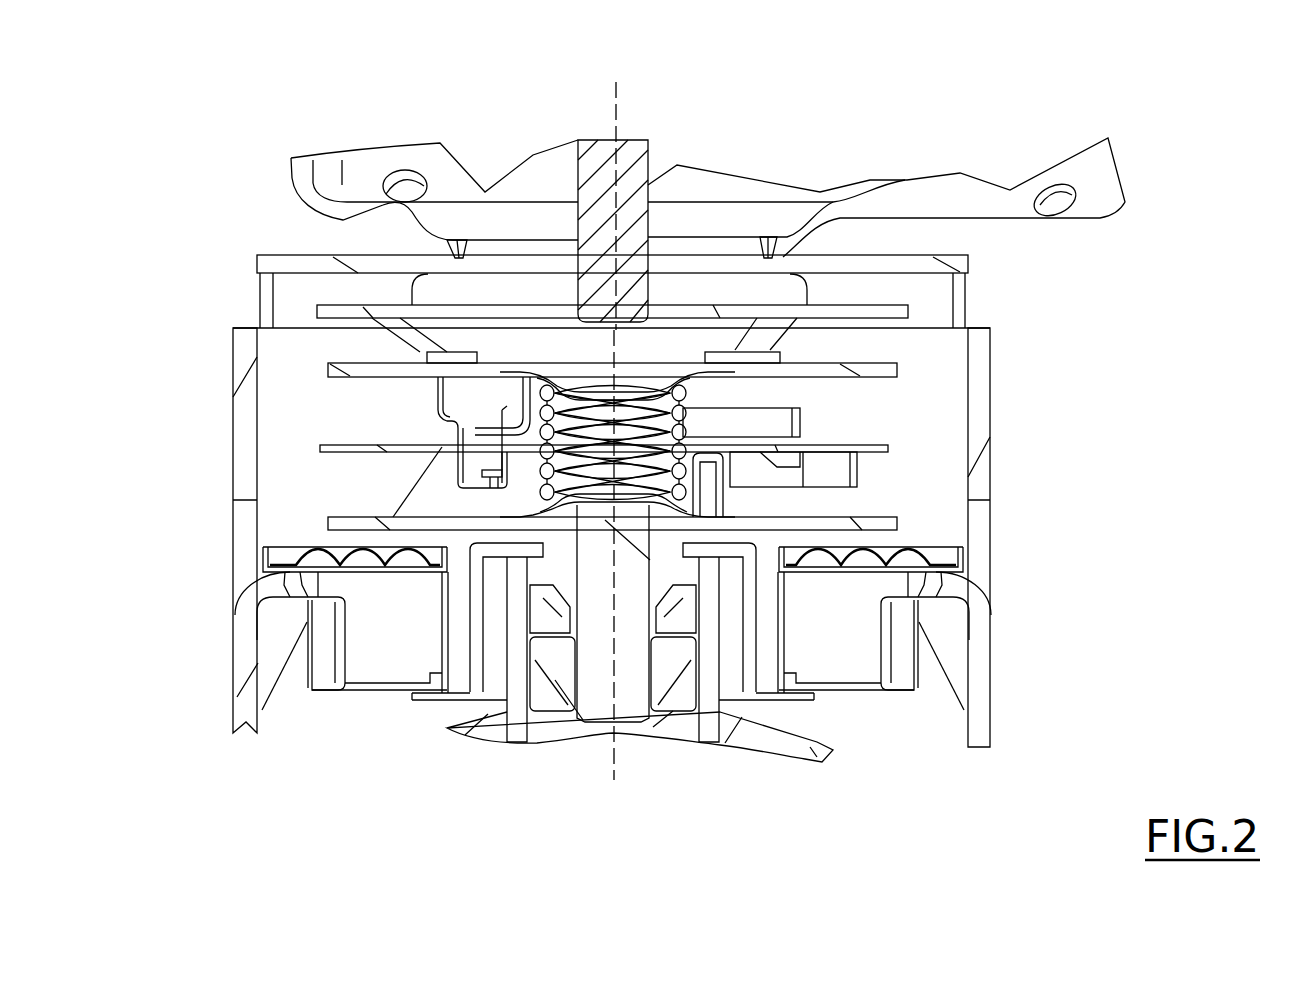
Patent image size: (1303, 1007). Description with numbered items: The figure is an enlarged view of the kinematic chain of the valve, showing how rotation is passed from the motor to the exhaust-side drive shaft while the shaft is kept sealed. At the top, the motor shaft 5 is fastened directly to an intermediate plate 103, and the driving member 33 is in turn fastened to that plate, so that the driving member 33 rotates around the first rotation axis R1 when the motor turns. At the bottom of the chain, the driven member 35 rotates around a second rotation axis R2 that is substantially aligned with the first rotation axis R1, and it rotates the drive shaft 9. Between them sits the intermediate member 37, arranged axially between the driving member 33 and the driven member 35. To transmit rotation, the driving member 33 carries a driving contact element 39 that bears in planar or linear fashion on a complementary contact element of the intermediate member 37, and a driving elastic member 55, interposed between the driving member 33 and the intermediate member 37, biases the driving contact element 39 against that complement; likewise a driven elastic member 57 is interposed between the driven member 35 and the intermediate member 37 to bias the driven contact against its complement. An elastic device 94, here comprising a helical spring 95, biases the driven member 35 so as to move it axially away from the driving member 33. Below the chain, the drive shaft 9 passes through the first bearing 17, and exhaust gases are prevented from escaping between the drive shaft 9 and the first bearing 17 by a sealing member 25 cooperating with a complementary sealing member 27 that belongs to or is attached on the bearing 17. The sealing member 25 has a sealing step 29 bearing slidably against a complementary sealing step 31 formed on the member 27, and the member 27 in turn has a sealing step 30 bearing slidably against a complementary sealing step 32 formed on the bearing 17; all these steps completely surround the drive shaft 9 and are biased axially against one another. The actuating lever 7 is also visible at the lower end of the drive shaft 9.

The motor shaft 5 is at (584, 141).
The actuating lever 7 is at (833, 742).
The drive shaft 9 is at (622, 720).
The first bearing 17 is at (722, 697).
The sealing member 25 is at (480, 595).
The complementary sealing member 27 is at (540, 615).
The sealing step 29 is at (653, 567).
The sealing step 30 is at (530, 622).
The complementary sealing step 31 is at (678, 672).
The complementary sealing step 32 is at (565, 612).
The driving member 33 is at (905, 372).
The driven member 35 is at (908, 523).
The intermediate member 37 is at (904, 446).
The driving contact element 39 is at (470, 398).
The driving elastic member 55 is at (776, 423).
The driven elastic member 57 is at (838, 473).
The elastic device 94 is at (685, 392).
The helical spring 95 is at (543, 463).
The intermediate plate 103 is at (920, 300).
The first rotation axis R1 is at (618, 98).
The second rotation axis R2 is at (610, 762).